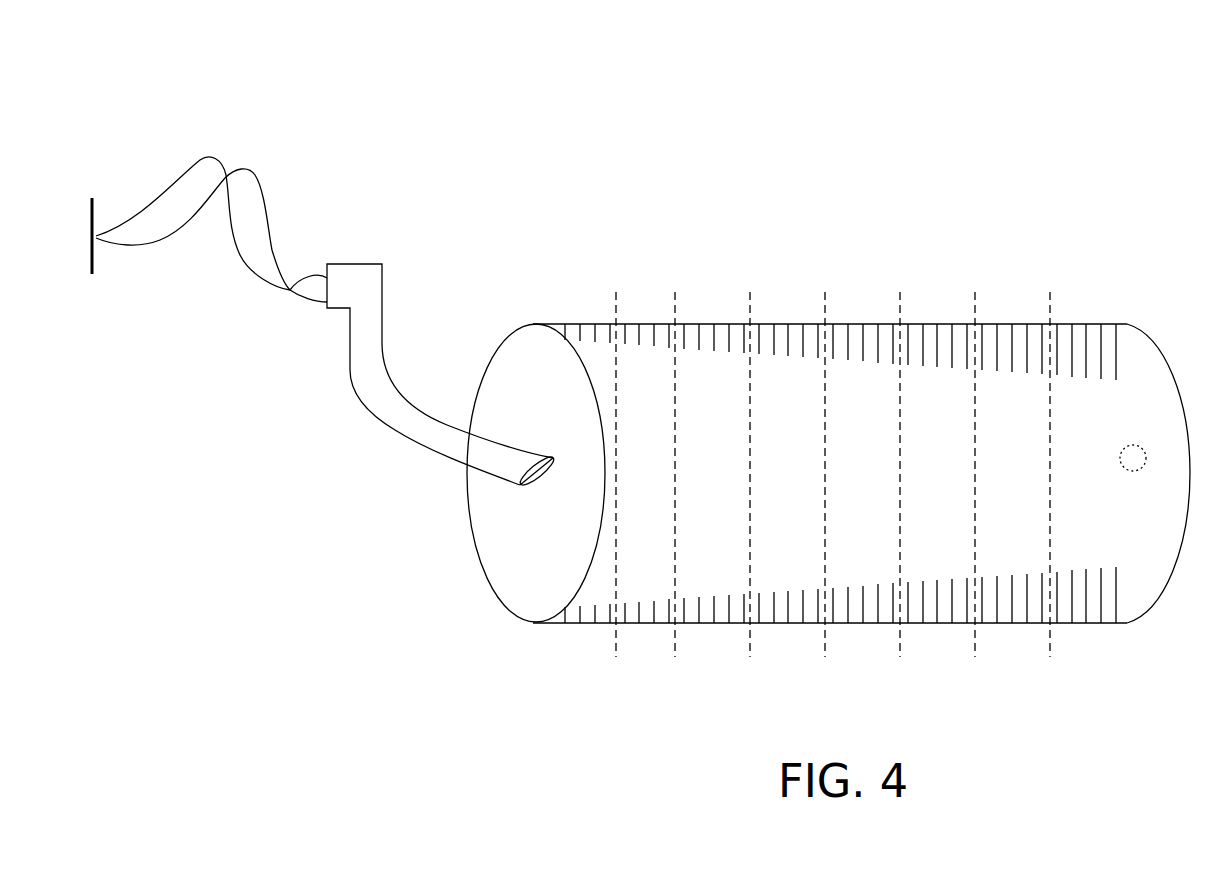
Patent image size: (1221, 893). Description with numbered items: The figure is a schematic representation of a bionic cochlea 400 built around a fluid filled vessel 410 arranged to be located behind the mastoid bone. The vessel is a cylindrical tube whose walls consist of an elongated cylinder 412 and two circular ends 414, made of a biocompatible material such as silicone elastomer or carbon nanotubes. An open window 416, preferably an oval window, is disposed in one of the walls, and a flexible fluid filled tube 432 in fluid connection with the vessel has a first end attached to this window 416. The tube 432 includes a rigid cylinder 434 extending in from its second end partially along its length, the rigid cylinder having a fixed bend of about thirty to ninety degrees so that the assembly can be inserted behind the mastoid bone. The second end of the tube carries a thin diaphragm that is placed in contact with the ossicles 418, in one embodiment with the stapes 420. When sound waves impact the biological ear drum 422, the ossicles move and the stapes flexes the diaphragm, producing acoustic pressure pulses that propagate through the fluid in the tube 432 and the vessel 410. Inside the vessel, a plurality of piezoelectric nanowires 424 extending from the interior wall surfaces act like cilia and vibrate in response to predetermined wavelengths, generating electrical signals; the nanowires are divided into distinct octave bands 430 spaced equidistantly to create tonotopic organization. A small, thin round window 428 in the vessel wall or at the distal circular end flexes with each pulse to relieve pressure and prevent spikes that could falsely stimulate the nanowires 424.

The bionic cochlea 400 is at (365, 48).
The fluid filled vessel 410 is at (545, 324).
The elongated cylinder 412 is at (576, 624).
The circular ends 414 is at (498, 540).
The open window 416 is at (540, 478).
The ossicles 418 is at (153, 193).
The stapes 420 is at (290, 290).
The biological ear drum 422 is at (97, 262).
The piezoelectric nanowires 424 is at (773, 350).
The round window 428 is at (1122, 463).
The octave bands 430 is at (572, 315).
The flexible fluid filled tube 432 is at (363, 394).
The rigid cylinder 434 is at (383, 288).